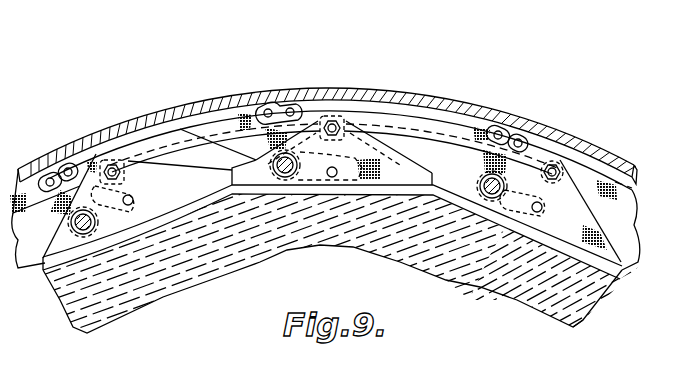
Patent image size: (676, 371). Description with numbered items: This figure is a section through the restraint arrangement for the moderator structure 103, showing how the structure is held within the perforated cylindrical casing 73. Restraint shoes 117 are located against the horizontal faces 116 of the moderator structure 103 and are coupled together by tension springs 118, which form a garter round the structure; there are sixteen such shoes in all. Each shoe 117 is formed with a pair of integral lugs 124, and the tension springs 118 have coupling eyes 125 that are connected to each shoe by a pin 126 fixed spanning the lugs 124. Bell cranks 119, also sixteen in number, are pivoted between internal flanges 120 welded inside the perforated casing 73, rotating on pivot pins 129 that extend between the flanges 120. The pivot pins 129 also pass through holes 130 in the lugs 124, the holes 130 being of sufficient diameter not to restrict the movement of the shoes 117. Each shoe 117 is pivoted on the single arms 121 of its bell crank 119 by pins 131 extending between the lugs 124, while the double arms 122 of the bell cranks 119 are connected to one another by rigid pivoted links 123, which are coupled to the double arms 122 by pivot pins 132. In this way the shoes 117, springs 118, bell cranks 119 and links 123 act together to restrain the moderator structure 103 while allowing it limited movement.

The perforated cylindrical casing 73 is at (118, 125).
The moderator structure 103 is at (190, 250).
The horizontal faces 116 is at (538, 250).
The restraint shoes 117 is at (504, 222).
The tension springs 118 is at (187, 160).
The bell cranks 119 is at (355, 195).
The internal flanges 120 is at (405, 175).
The arms 121 is at (320, 195).
The double arms 122 is at (48, 178).
The rigid pivoted links 123 is at (318, 116).
The integral lugs 124 is at (455, 182).
The coupling eyes 125 is at (376, 119).
The pin 126 is at (336, 120).
The pivot pins 129 is at (287, 178).
The holes 130 is at (240, 163).
The pins 131 is at (334, 178).
The pivot pins 132 is at (268, 110).